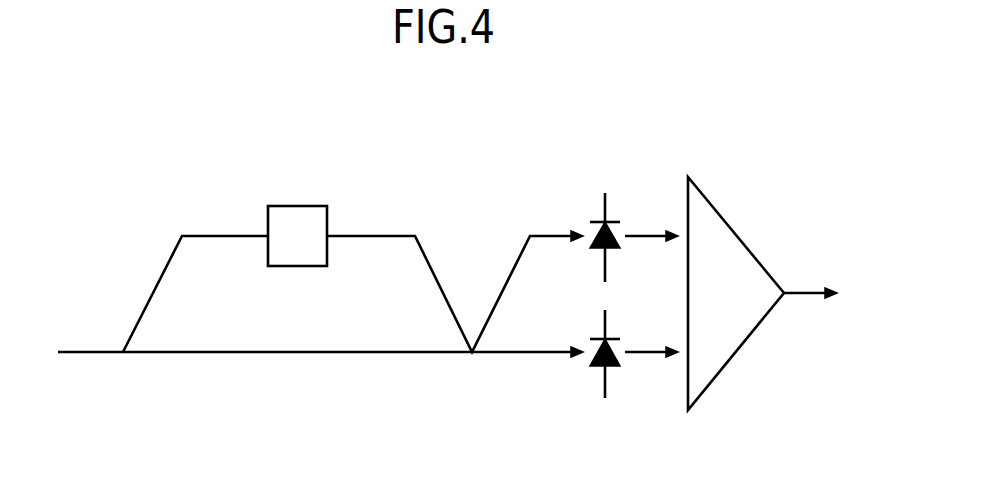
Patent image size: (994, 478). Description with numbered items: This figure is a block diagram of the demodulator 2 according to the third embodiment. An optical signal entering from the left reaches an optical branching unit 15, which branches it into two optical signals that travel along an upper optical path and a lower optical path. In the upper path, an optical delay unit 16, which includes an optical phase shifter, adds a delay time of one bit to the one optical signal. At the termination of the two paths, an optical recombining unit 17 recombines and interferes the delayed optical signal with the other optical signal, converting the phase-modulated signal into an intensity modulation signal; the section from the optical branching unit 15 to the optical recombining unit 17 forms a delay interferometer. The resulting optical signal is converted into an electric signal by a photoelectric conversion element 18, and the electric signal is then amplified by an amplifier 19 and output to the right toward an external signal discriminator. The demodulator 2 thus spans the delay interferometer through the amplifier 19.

The demodulator 2 is at (587, 120).
The optical branching unit 15 is at (118, 347).
The optical delay unit 16 is at (296, 206).
The optical recombining unit 17 is at (472, 335).
The photoelectric conversion element 18 is at (617, 232).
The amplifier 19 is at (733, 227).